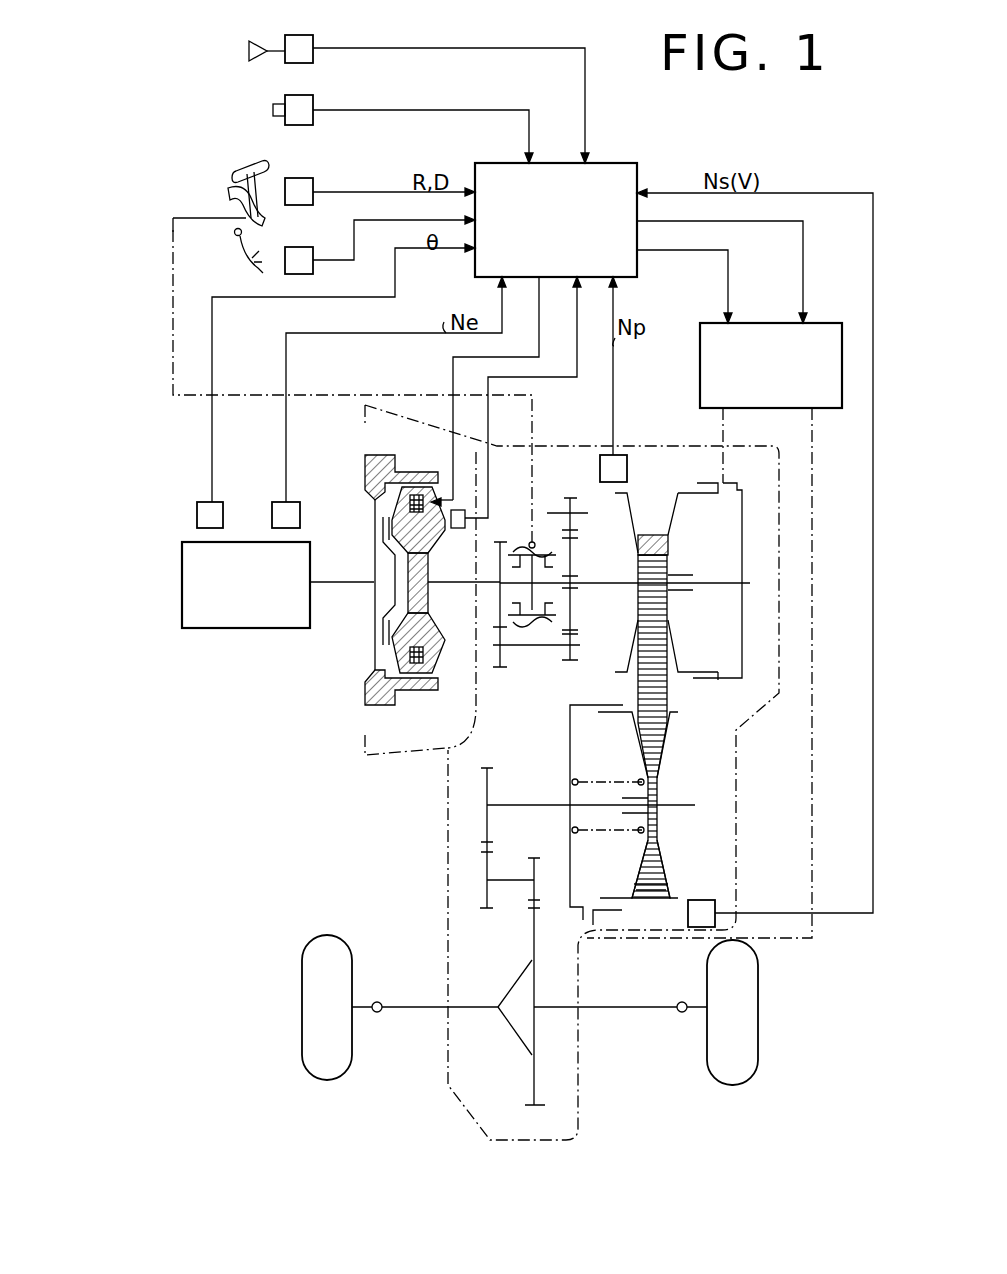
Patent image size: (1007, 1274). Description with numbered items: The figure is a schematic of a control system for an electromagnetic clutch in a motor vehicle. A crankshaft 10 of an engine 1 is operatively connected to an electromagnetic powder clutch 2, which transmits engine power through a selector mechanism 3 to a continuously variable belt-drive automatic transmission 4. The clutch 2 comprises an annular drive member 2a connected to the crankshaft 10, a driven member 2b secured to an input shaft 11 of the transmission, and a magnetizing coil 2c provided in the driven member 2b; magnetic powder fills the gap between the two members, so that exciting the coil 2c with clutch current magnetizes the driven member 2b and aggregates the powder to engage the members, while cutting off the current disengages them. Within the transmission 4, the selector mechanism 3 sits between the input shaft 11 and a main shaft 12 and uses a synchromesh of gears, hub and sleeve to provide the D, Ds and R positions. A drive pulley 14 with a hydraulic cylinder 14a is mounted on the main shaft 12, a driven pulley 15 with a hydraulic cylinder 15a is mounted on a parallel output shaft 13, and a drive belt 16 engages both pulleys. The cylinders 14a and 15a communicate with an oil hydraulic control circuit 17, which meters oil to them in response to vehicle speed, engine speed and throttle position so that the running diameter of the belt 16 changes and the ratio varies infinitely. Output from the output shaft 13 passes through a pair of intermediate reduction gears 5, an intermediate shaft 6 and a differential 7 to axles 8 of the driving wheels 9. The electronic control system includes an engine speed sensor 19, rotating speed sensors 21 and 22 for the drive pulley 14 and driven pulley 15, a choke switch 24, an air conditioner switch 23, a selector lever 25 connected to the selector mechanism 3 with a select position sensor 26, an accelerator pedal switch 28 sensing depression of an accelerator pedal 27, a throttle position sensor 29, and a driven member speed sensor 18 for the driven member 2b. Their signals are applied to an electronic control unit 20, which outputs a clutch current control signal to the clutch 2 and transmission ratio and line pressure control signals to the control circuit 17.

The engine 1 is at (212, 630).
The electromagnetic powder clutch 2 is at (430, 491).
The annular drive member 2a is at (364, 470).
The driven member 2b is at (430, 538).
The magnetizing coil 2c is at (424, 492).
The selector mechanism 3 is at (513, 526).
The continuously variable belt-drive automatic transmission 4 is at (666, 496).
The intermediate reduction gears 5 is at (489, 766).
The intermediate shaft 6 is at (503, 878).
The differential 7 is at (516, 982).
The axles 8 is at (421, 1005).
The vehicle driving wheels 9 is at (352, 1050).
The crankshaft 10 is at (362, 584).
The input shaft 11 is at (451, 584).
The main shaft 12 is at (618, 586).
The output shaft 13 is at (528, 803).
The drive pulley 14 is at (630, 526).
The hydraulic cylinder 14a is at (730, 549).
The driven pulley 15 is at (668, 714).
The hydraulic cylinder 15a is at (576, 746).
The drive belt 16 is at (636, 688).
The oil hydraulic control circuit 17 is at (700, 367).
The driven member speed sensor 18 is at (455, 528).
The engine speed sensor 19 is at (280, 502).
The electronic control unit 20 is at (636, 165).
The rotating speed sensor 21 is at (627, 470).
The rotating speed sensor 22 is at (702, 900).
The air conditioner switch 23 is at (313, 108).
The choke switch 24 is at (313, 40).
The selector lever 25 is at (240, 168).
The select position sensor 26 is at (313, 183).
The accelerator pedal 27 is at (244, 254).
The accelerator pedal switch 28 is at (313, 255).
The throttle position sensor 29 is at (210, 502).